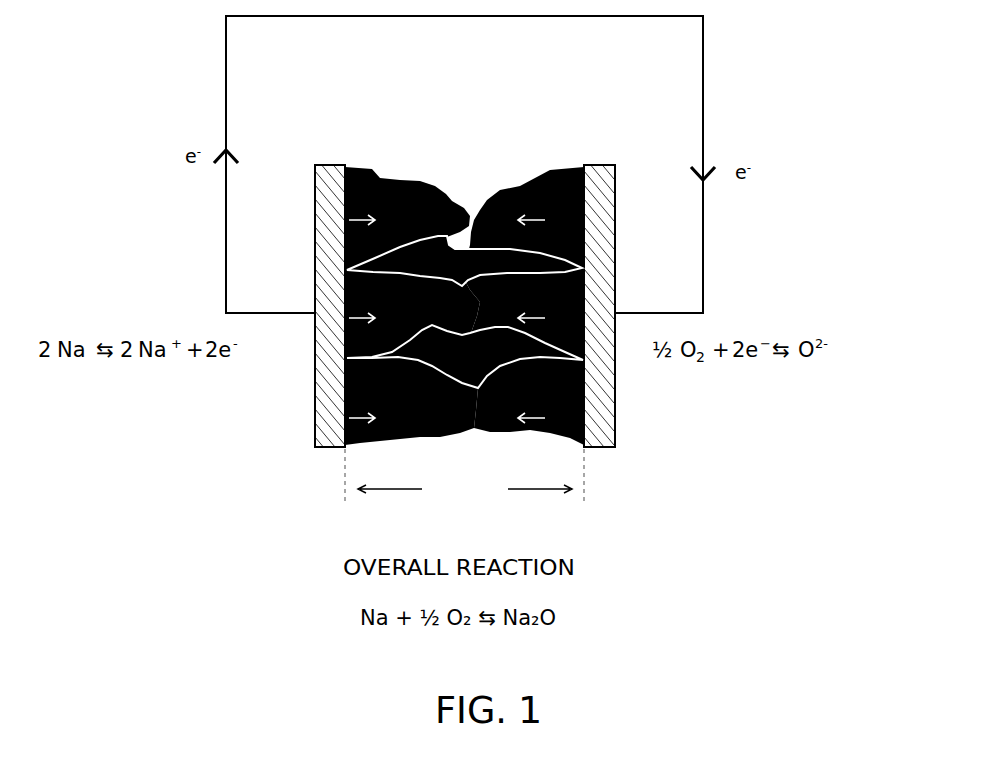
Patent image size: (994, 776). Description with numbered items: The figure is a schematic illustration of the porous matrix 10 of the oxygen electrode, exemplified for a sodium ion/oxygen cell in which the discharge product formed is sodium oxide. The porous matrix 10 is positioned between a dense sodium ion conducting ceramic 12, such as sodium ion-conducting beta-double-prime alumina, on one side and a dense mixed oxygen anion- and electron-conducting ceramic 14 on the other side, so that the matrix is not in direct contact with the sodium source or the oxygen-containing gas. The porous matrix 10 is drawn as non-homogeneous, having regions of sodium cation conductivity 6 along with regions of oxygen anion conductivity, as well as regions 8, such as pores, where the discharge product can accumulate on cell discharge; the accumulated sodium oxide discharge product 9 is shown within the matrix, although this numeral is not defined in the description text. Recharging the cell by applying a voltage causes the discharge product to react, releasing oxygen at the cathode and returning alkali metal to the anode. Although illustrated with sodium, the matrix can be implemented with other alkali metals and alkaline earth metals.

The regions of sodium cation conductivity 6 is at (376, 195).
The regions where discharge product can accumulate 8 is at (524, 188).
The sodium oxide (Na2O) reaction product 9 is at (418, 244).
The porous matrix 10 is at (458, 444).
The dense sodium ion conducting ceramic 12 is at (323, 397).
The dense mixed oxygen anion- and electron-conducting ceramic 14 is at (598, 405).